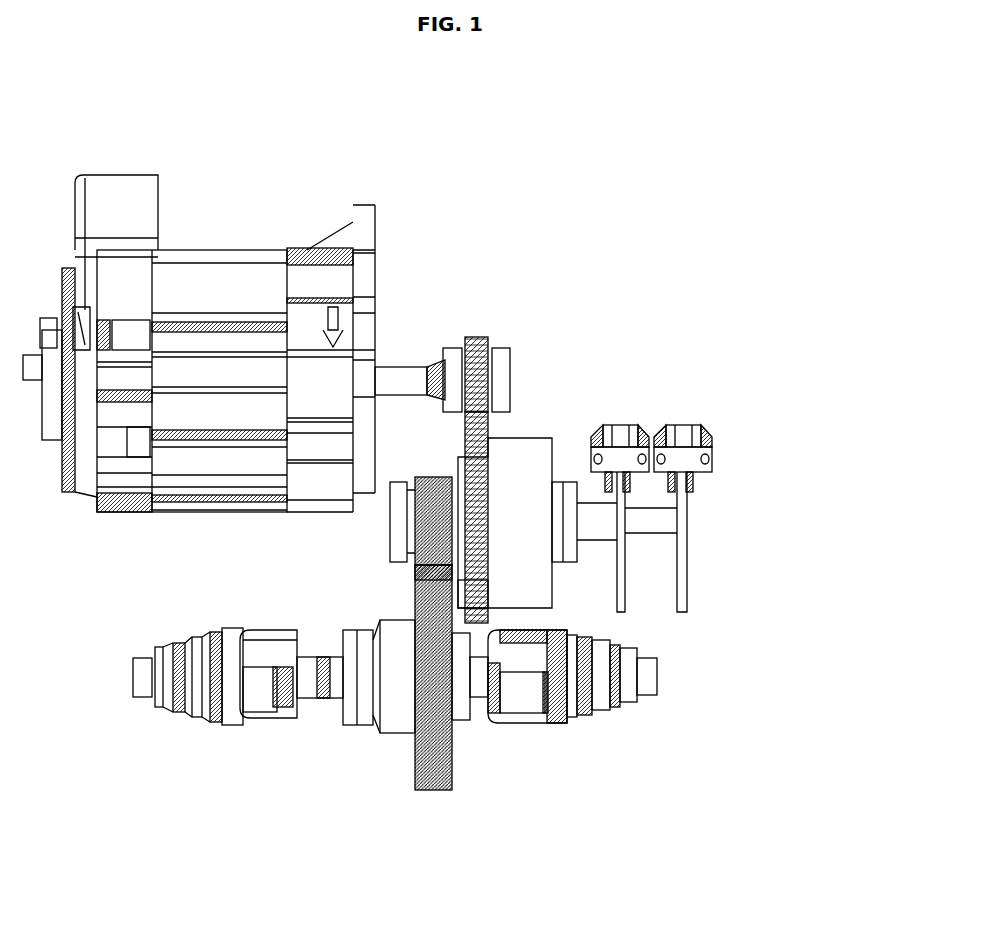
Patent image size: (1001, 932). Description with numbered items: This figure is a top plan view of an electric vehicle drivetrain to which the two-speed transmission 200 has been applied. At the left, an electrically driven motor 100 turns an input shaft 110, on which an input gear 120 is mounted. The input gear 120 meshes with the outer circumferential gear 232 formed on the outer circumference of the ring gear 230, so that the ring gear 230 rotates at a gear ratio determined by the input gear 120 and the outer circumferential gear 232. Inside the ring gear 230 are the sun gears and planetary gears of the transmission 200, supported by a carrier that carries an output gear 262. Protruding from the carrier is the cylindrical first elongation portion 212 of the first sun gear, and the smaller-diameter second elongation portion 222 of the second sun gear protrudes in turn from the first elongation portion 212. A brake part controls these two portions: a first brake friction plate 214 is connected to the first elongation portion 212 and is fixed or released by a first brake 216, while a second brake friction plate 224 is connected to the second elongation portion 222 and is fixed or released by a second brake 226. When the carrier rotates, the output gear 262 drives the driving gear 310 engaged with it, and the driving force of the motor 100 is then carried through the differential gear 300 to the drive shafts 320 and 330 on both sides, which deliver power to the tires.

The motor 100 is at (376, 292).
The input shaft 110 is at (405, 367).
The input gear 120 is at (478, 337).
The two-speed transmission 200 is at (716, 553).
The first elongation portion 212 is at (592, 540).
The first brake friction plate 214 is at (622, 592).
The first brake 216 is at (627, 425).
The second elongation portion 222 is at (672, 518).
The second brake friction plate 224 is at (684, 578).
The second brake 226 is at (687, 425).
The ring gear 230 is at (542, 437).
The outer circumferential gear 232 is at (478, 625).
The output gear 262 is at (437, 477).
The differential gear 300 is at (387, 733).
The driving gear 310 is at (432, 790).
The drive shaft 320 is at (330, 697).
The drive shaft 330 is at (478, 697).